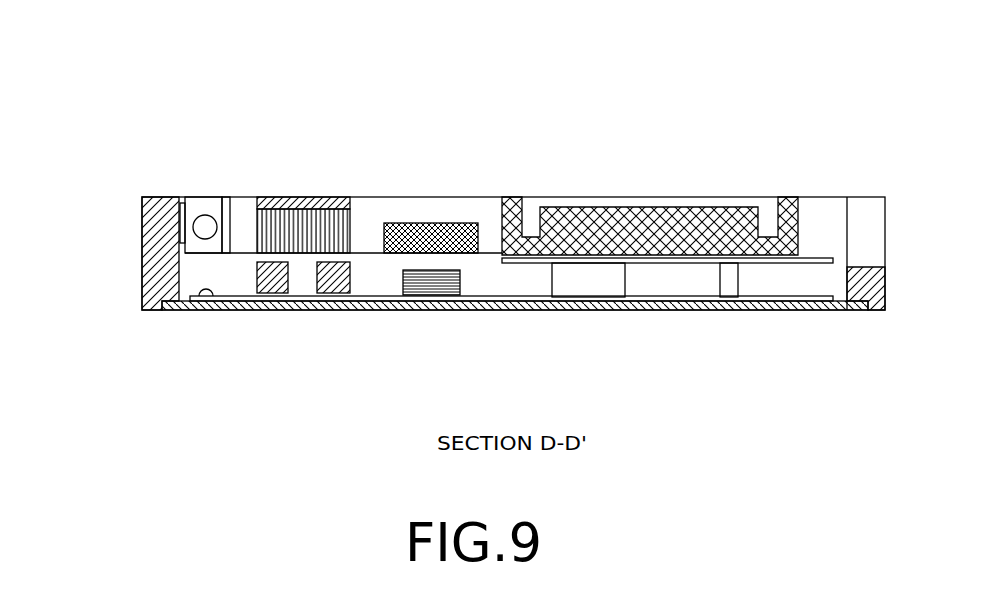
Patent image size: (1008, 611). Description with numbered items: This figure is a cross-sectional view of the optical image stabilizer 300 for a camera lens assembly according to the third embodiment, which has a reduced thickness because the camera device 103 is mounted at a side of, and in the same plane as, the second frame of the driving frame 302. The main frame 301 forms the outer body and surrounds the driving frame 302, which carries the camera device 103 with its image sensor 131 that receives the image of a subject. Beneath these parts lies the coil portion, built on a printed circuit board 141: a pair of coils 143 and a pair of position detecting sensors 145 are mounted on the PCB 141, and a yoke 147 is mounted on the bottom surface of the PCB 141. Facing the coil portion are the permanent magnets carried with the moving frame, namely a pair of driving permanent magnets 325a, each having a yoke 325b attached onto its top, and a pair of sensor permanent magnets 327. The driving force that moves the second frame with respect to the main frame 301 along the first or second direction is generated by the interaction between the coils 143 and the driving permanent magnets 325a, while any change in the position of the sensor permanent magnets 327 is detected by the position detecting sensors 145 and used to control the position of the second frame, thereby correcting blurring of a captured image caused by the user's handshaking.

The optical image stabilizer 300 is at (737, 62).
The main frame 301 is at (155, 248).
The driving frame 302 is at (215, 186).
The yoke 325b is at (282, 207).
The driving permanent magnets 325a is at (337, 228).
The sensor permanent magnets 327 is at (425, 226).
The image sensor 131 is at (668, 230).
The camera device 103 is at (802, 190).
The printed circuit board 141 is at (201, 310).
The yoke 147 is at (222, 310).
The coils 143 is at (280, 293).
The position detecting sensors 145 is at (430, 290).